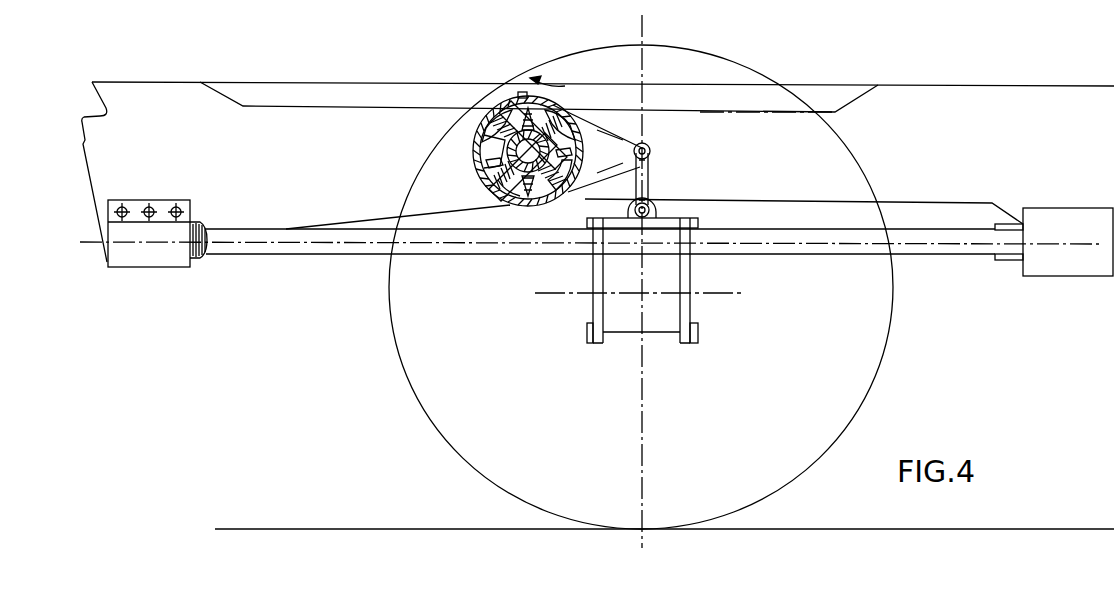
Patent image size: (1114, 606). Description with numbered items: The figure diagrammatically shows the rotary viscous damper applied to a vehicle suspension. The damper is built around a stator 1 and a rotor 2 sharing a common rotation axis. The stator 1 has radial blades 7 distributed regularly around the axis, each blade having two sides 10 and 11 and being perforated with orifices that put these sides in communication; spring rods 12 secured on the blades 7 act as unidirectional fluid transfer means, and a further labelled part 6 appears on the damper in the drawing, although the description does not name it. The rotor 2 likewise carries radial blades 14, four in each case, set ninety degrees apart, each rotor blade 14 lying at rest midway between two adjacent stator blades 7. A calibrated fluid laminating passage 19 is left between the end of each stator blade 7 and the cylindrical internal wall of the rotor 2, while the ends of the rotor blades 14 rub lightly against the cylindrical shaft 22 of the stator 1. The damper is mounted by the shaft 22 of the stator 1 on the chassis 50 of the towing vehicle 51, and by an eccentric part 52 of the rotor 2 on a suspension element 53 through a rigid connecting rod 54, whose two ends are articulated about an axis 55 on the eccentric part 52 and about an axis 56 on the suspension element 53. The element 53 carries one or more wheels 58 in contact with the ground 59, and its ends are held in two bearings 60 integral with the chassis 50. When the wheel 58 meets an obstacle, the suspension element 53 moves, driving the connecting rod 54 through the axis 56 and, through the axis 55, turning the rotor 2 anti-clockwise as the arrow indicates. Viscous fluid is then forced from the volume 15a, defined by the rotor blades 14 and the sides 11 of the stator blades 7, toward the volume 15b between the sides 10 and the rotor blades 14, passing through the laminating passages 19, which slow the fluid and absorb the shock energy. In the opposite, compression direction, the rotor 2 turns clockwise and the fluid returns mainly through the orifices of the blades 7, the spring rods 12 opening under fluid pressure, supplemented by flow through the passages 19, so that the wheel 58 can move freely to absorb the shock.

The stator 1 is at (477, 128).
The rotor 2 is at (552, 84).
The pawl 6 is at (513, 200).
The radial blades 7 is at (512, 192).
The side of blade 10 is at (562, 124).
The side of blade 11 is at (552, 185).
The spring rods 12 is at (470, 140).
The radial blades 14 is at (520, 114).
The volume 15a is at (556, 105).
The volume 15b is at (508, 112).
The fluid laminating passage 19 is at (477, 163).
The shaft 22 is at (482, 170).
The chassis 50 is at (285, 80).
The towing vehicle 51 is at (310, 277).
The eccentric part 52 is at (630, 130).
The suspension element 53 is at (760, 256).
The connecting rod 54 is at (650, 184).
The axis 55 is at (655, 151).
The axis 56 is at (655, 212).
The wheel 58 is at (893, 366).
The ground 59 is at (360, 527).
The bearings 60 is at (165, 263).